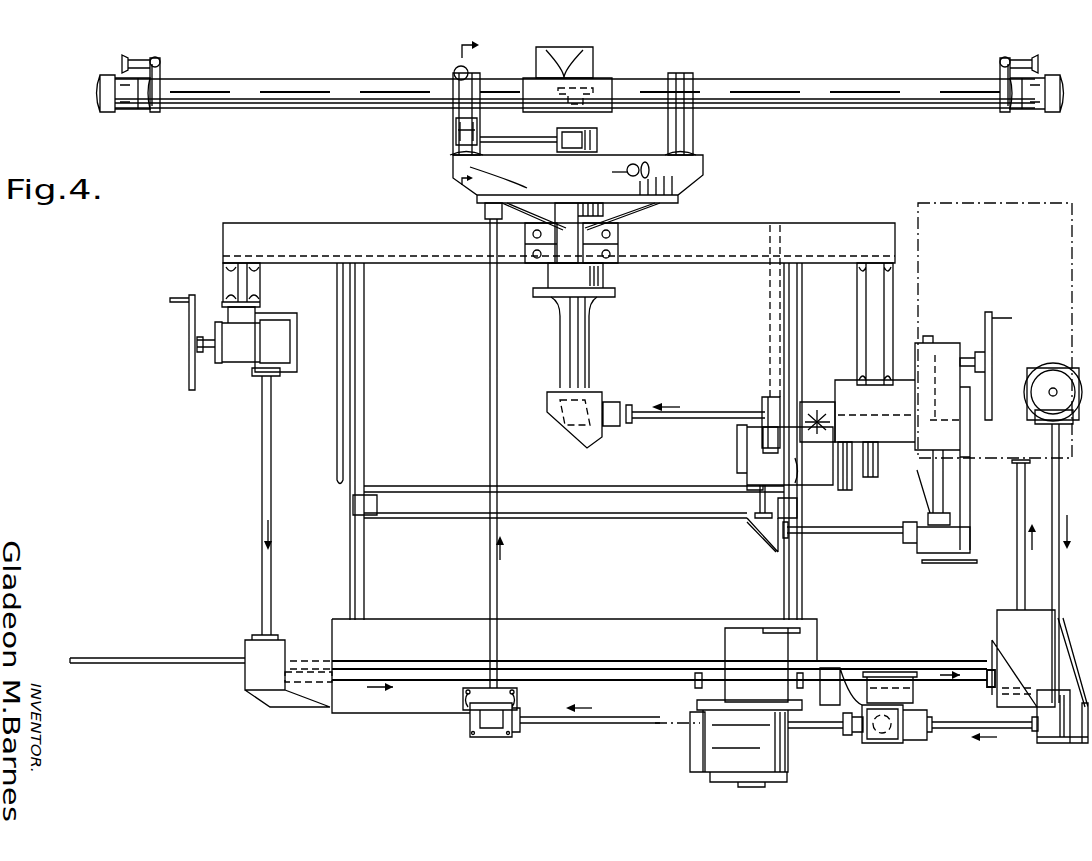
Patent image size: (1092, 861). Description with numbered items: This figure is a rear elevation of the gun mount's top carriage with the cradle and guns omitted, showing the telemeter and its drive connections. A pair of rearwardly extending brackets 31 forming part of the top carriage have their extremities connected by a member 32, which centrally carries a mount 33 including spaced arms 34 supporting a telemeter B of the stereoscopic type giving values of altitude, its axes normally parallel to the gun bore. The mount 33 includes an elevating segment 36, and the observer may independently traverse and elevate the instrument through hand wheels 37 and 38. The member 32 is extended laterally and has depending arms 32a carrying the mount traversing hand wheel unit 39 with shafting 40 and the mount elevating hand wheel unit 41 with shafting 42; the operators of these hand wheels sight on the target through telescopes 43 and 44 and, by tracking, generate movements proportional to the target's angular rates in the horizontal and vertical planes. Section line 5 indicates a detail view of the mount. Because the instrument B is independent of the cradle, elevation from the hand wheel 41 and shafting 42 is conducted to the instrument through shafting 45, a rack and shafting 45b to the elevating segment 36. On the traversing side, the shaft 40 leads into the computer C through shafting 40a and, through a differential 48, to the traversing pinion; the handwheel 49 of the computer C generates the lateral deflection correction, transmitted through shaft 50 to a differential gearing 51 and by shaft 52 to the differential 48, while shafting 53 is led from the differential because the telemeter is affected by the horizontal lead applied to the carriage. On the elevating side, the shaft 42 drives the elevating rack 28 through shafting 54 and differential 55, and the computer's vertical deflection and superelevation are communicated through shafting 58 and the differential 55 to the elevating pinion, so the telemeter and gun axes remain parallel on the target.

The section line 5- 5 is at (475, 118).
The elevating rack 28 is at (770, 300).
The rearwardly extending brackets 31 is at (360, 398).
The member 32 is at (559, 243).
The depending arms 32a is at (262, 283).
The mount 33 is at (680, 187).
The spaced arms 34 is at (452, 122).
The elevating segment 36 is at (458, 130).
The hand wheel 37 is at (641, 164).
The hand wheel 38 is at (453, 70).
The mount traversing hand wheel unit 39 is at (188, 318).
The shafting 40 is at (270, 516).
The shafting 40a is at (978, 688).
The mount elevating hand wheel unit 41 is at (992, 355).
The shafting 42 is at (912, 435).
The telescope 43 is at (146, 62).
The telescope 44 is at (1013, 66).
The shafting 45 is at (690, 414).
The shafting 45b is at (500, 137).
The differential 48 is at (746, 707).
The handwheel 49 is at (1046, 367).
The shaft 50 is at (1058, 558).
The differential gearing 51 is at (920, 742).
The shaft 52 is at (808, 727).
The shafting 53 is at (616, 724).
The shafting 54 is at (818, 410).
The differential 55 is at (738, 452).
The shafting 58 is at (880, 540).
The telemeter B is at (581, 79).
The computer C is at (995, 330).